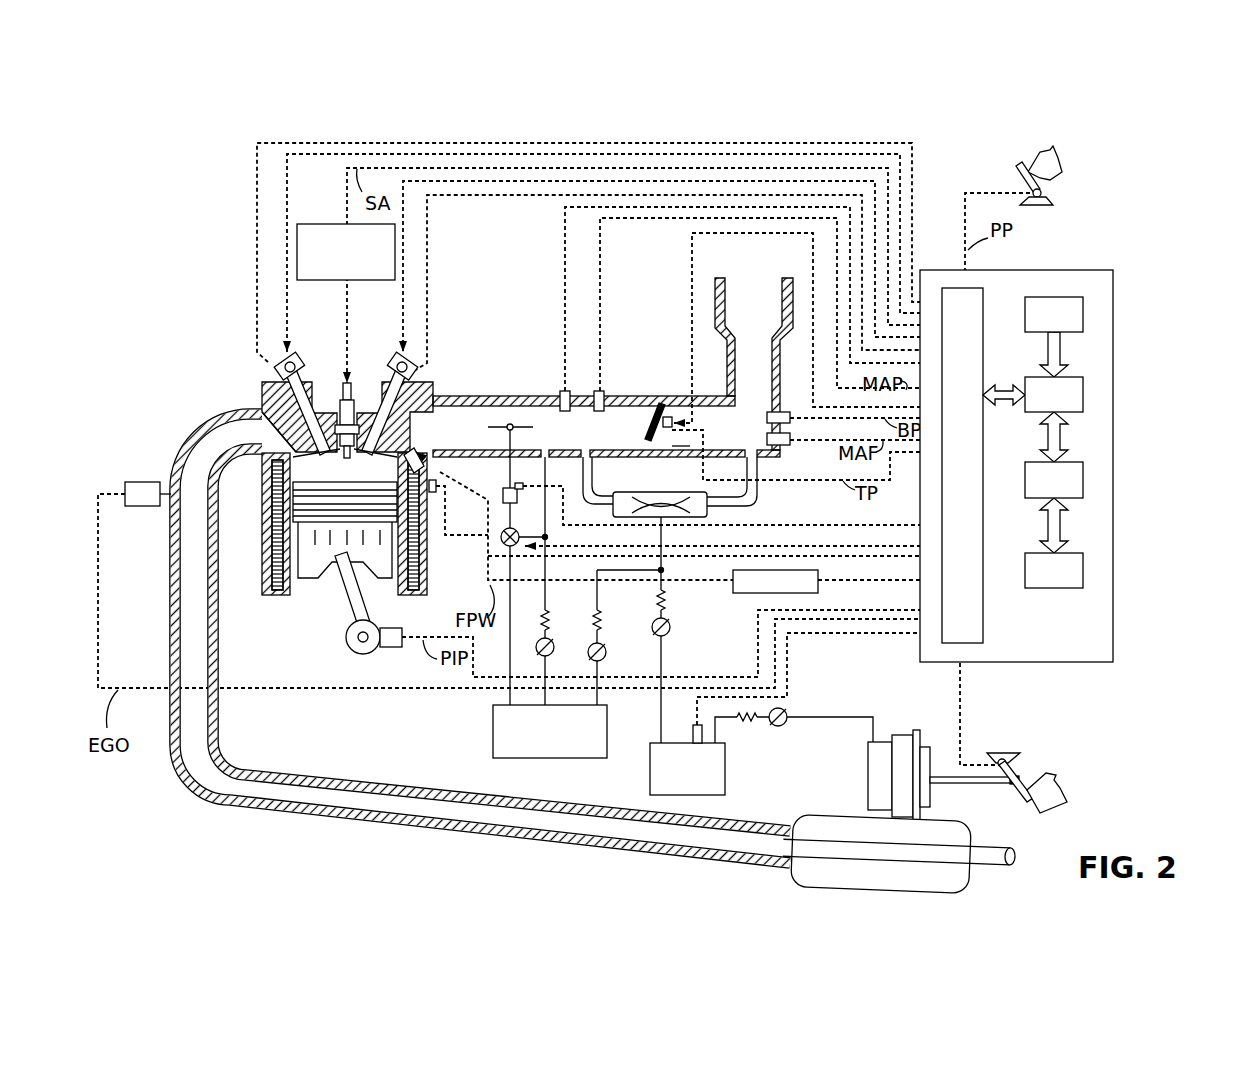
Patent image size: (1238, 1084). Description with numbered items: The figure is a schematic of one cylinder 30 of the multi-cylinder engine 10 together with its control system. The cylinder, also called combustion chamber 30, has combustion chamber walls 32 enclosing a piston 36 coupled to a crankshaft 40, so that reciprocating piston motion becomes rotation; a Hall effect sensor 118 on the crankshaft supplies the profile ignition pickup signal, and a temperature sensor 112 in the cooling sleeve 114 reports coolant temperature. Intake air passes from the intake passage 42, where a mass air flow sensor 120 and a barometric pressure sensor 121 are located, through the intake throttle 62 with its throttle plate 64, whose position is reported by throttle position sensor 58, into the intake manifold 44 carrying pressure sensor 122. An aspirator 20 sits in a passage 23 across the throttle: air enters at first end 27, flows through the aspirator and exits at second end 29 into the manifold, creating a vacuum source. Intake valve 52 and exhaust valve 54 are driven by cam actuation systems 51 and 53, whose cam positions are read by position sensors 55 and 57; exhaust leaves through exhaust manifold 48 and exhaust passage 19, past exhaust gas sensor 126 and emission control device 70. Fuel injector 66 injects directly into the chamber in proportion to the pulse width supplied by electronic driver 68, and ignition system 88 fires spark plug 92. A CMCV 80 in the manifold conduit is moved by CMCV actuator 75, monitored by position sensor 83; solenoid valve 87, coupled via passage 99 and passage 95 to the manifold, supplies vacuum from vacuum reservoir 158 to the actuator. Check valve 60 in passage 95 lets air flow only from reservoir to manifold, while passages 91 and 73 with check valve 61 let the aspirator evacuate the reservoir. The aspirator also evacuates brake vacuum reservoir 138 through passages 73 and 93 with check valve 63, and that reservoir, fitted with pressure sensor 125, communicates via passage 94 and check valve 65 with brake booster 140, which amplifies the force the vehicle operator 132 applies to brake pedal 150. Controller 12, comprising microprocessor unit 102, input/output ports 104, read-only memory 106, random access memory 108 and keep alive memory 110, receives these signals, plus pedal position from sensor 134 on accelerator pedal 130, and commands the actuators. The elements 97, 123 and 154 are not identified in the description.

The engine 10 is at (212, 340).
The controller 12 is at (1052, 453).
The exhaust passage 19 is at (521, 832).
The aspirator 20 is at (637, 492).
The aspirator passage 23 is at (758, 482).
The first end 27 is at (749, 447).
The second end 29 is at (590, 450).
The cylinder 30 is at (343, 466).
The combustion chamber walls 32 is at (302, 588).
The piston 36 is at (332, 548).
The crankshaft 40 is at (357, 653).
The intake passage 42 is at (754, 364).
The intake manifold 44 is at (584, 419).
The exhaust manifold 48 is at (482, 638).
The cam actuation system 51 is at (400, 353).
The intake valve 52 is at (385, 438).
The cam actuation system 53 is at (290, 353).
The exhaust valve 54 is at (262, 412).
The position sensor 55 is at (419, 369).
The position sensor 57 is at (273, 370).
The throttle position sensor 58 is at (688, 450).
The check valve 60 is at (553, 645).
The check valve 61 is at (601, 646).
The intake throttle 62 is at (657, 404).
The check valve 63 is at (670, 628).
The throttle plate 64 is at (692, 385).
The check valve 65 is at (787, 714).
The fuel injector 66 is at (443, 478).
The electronic driver 68 is at (818, 583).
The emission control device 70 is at (795, 878).
The passage 73 is at (663, 527).
The CMCV actuator 75 is at (503, 494).
The CMCV 80 is at (533, 427).
The position sensor 83 is at (521, 485).
The solenoid valve 87 is at (502, 538).
The ignition system 88 is at (308, 224).
The passage 91 is at (600, 600).
The spark plug 92 is at (351, 385).
The passage 93 is at (664, 665).
The passage 94 is at (836, 717).
The passage 95 is at (548, 577).
The fuel passage 97 is at (510, 606).
The passage 99 is at (525, 540).
The microprocessor unit 102 is at (1083, 392).
The input/output ports 104 is at (987, 296).
The read-only memory 106 is at (1083, 312).
The random access memory 108 is at (1083, 478).
The keep alive memory 110 is at (1083, 566).
The temperature sensor 112 is at (433, 493).
The cooling sleeve 114 is at (427, 566).
The Hall effect sensor 118 is at (388, 648).
The mass air flow sensor 120 is at (787, 446).
The barometric pressure sensor 121 is at (796, 408).
The pressure sensor 122 is at (601, 391).
The pressure sensor 123 is at (560, 392).
The pressure sensor 125 is at (696, 725).
The exhaust gas sensor 126 is at (125, 488).
The accelerator pedal 130 is at (1022, 175).
The vehicle operator 132 is at (1068, 795).
The pedal position sensor 134 is at (1050, 198).
The brake vacuum reservoir 138 is at (687, 769).
The brake booster 140 is at (907, 733).
The brake pedal 150 is at (1022, 808).
The brake pedal sensor 154 is at (988, 753).
The vacuum reservoir 158 is at (550, 731).